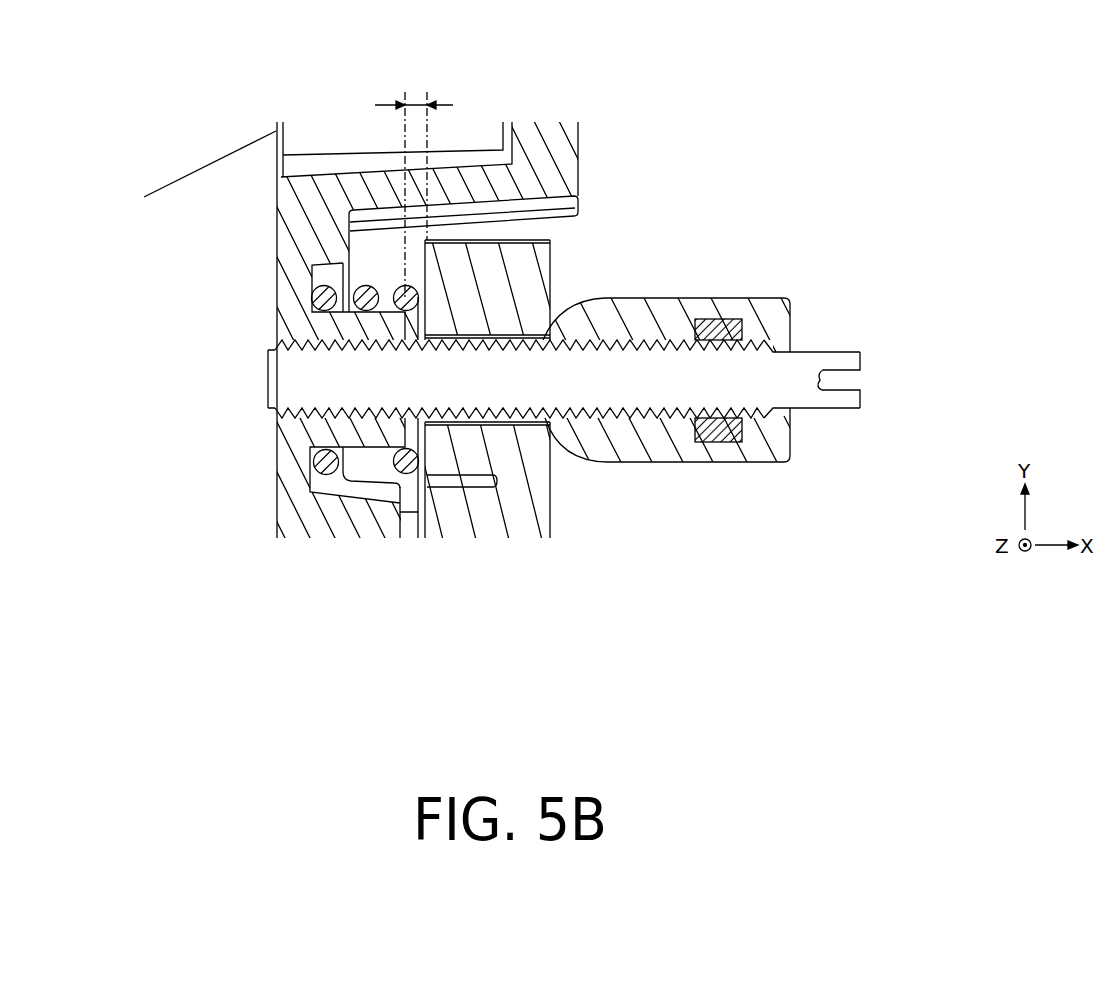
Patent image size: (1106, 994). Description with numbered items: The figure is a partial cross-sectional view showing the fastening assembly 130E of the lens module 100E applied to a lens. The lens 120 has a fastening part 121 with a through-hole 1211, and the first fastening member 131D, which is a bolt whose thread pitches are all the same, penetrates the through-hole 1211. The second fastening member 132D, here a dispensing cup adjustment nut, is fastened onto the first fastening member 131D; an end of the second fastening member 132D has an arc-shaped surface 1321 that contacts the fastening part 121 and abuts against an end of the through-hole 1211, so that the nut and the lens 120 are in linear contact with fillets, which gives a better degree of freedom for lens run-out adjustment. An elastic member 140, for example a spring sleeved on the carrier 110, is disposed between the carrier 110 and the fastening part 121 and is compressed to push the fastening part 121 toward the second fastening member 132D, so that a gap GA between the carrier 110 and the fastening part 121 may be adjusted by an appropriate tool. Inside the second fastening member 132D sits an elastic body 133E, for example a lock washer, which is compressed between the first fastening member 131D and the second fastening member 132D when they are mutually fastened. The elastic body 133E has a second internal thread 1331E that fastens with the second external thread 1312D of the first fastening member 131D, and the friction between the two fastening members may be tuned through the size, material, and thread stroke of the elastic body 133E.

The lens module 100E is at (1020, 653).
The carrier 110 is at (347, 190).
The elastic member 140 is at (401, 286).
The gap GA is at (416, 104).
The lens 120 is at (516, 287).
The fastening part 121 is at (548, 275).
The through-hole 1211 is at (500, 342).
The fastening assembly 130E is at (564, 477).
The first fastening member 131D is at (532, 393).
The second external thread 1312D is at (488, 423).
The second fastening member 132D is at (620, 448).
The elastic body 133E is at (708, 448).
The arc-shaped surface 1321 is at (572, 306).
The second internal thread 1331E is at (738, 342).